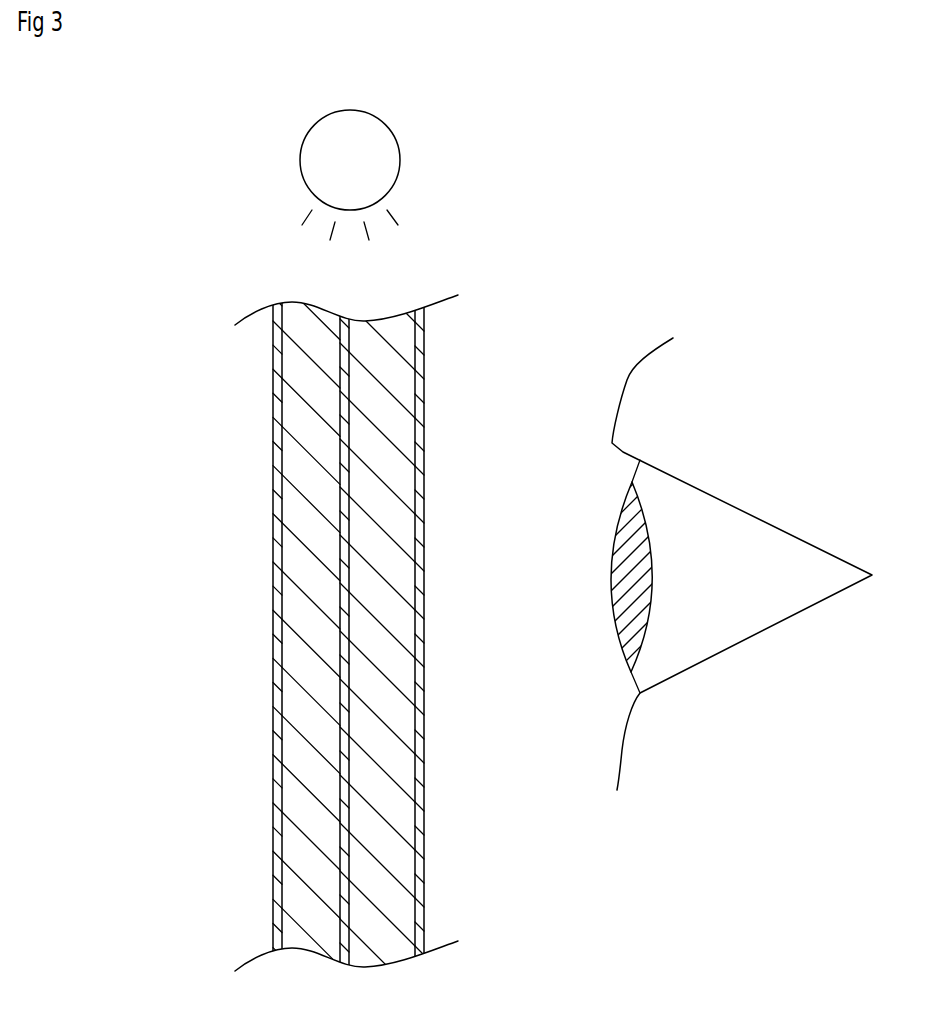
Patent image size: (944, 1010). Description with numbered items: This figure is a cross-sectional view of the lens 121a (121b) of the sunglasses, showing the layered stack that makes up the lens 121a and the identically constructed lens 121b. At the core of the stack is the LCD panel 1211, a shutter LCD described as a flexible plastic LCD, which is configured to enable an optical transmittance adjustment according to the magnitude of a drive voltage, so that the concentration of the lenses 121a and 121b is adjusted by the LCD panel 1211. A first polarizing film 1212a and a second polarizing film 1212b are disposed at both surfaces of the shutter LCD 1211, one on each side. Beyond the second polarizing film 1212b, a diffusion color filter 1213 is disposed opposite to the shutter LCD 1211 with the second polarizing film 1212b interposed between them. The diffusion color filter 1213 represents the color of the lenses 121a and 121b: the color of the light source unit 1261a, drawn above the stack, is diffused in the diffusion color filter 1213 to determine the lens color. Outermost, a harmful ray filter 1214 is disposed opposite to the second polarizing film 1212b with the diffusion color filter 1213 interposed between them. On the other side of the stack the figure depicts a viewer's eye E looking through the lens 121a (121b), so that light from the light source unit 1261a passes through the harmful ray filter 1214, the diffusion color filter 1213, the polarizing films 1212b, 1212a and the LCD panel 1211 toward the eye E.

The light source unit 1261a is at (400, 160).
The lens 121a is at (230, 479).
The lens 121b is at (323, 633).
The harmful ray filter 1214 is at (275, 607).
The diffusion color filter 1213 is at (318, 742).
The second polarizing film 1212b is at (347, 810).
The LCD panel 1211 is at (390, 660).
The first polarizing film 1212a is at (420, 525).
The eye of user E is at (717, 610).